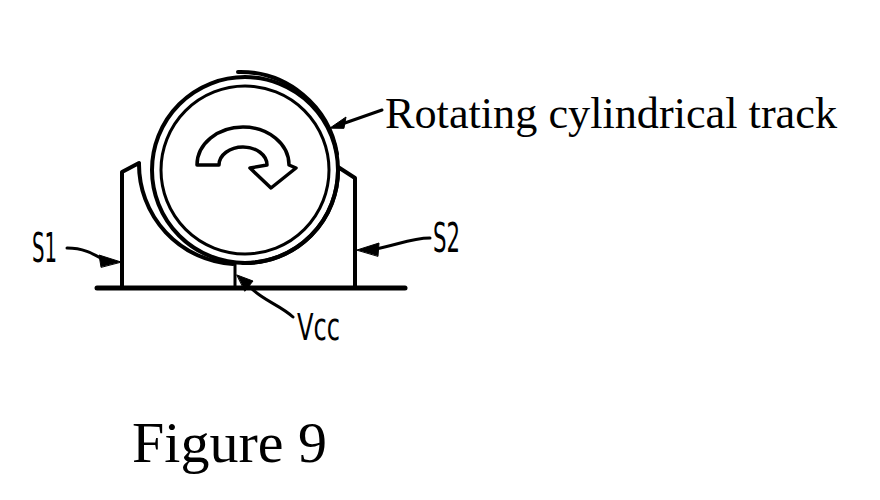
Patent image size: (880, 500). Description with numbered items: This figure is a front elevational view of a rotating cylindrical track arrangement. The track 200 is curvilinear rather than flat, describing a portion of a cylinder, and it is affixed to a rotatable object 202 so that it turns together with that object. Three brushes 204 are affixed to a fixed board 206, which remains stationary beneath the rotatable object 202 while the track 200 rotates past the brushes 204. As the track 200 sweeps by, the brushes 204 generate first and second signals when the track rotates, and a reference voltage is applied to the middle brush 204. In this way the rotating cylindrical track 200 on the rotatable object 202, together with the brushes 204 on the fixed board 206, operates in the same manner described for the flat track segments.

The track 200 is at (297, 88).
The rotatable object 202 is at (168, 118).
The brushes 204 is at (120, 213).
The fixed board 206 is at (385, 292).